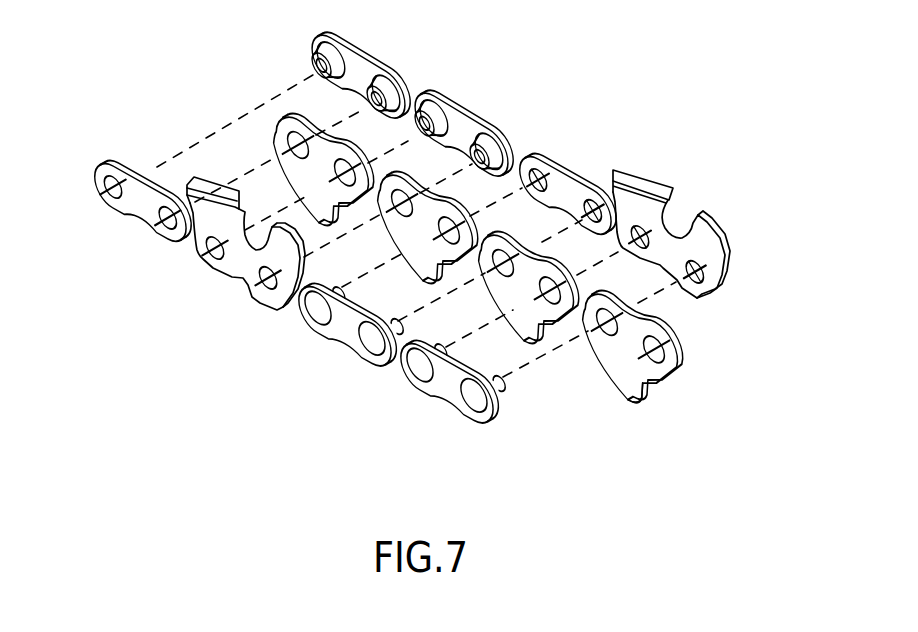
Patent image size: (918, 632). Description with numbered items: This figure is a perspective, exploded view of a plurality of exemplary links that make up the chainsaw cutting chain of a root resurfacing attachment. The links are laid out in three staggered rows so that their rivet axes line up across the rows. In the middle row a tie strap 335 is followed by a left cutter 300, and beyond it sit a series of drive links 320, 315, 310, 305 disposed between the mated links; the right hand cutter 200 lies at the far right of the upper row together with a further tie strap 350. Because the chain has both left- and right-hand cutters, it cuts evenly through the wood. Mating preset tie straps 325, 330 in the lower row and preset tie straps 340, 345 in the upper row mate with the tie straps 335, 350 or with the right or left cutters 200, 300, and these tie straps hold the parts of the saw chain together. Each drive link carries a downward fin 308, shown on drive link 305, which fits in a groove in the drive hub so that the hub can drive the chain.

The right hand cutter 200 is at (720, 228).
The left cutter 300 is at (251, 285).
The drive link 305 is at (688, 358).
The fin 308 is at (633, 400).
The drive link 310 is at (530, 352).
The drive link 315 is at (380, 174).
The drive link 320 is at (287, 122).
The preset tie strap 325 is at (450, 394).
The preset tie strap 330 is at (343, 340).
The tie strap 335 is at (133, 210).
The preset tie strap 340 is at (476, 112).
The preset tie strap 345 is at (376, 54).
The tie strap 350 is at (570, 170).